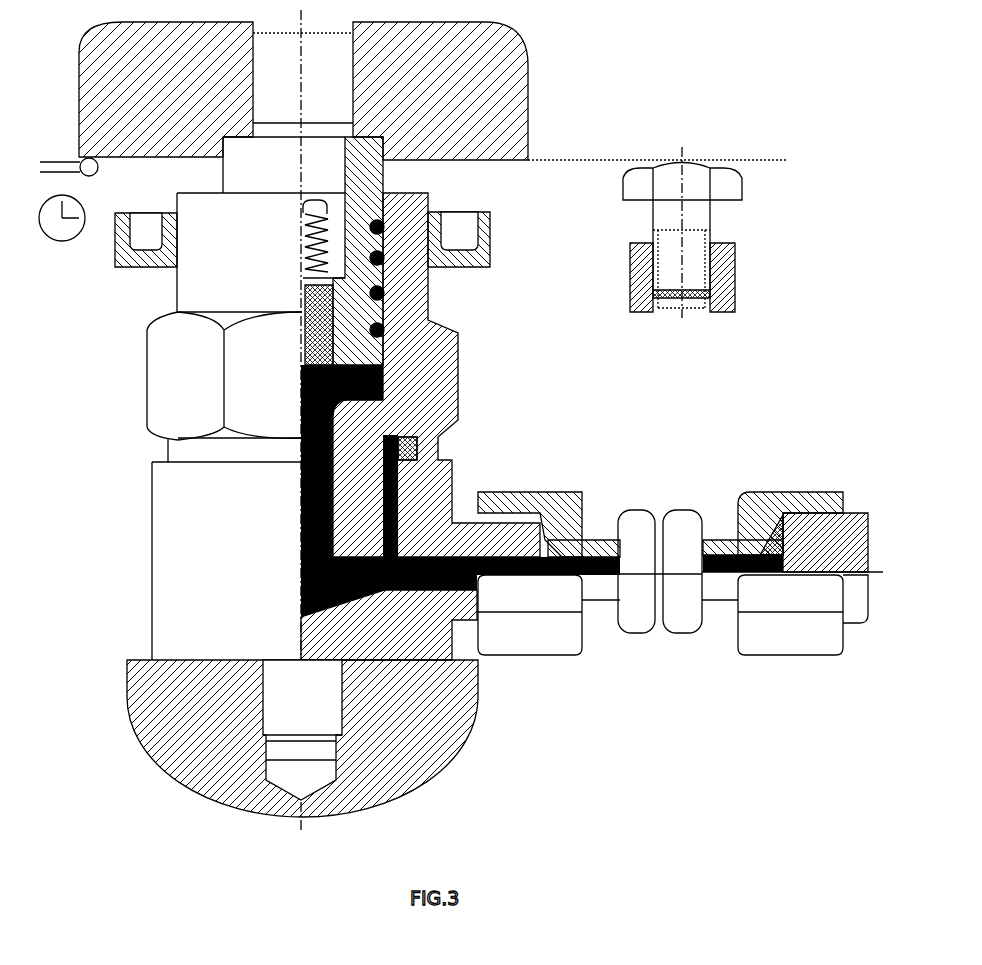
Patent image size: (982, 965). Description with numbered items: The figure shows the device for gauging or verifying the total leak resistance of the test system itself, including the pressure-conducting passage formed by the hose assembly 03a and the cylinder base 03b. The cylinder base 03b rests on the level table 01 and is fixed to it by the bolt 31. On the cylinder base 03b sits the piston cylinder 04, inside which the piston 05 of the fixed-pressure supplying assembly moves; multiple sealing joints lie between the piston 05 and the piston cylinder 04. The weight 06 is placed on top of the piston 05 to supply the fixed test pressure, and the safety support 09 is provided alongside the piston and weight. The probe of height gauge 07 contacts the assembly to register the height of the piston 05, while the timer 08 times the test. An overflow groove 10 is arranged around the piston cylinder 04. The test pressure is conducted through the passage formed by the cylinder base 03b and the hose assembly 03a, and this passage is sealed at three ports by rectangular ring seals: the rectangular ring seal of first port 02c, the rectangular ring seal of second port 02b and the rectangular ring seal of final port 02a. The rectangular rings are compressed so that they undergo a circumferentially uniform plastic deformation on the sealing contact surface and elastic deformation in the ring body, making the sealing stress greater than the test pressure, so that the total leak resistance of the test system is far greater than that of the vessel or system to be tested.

The level table 01 is at (147, 660).
The rectangular ring seal of final port 02a is at (748, 540).
The rectangular ring seal of second port 02b is at (582, 541).
The rectangular ring seal of first port 02c is at (420, 446).
The hose assembly 03a is at (788, 490).
The cylinder base 03b is at (455, 490).
The piston cylinder 04 is at (459, 373).
The piston 05 is at (421, 167).
The weight 06 is at (528, 64).
The probe of height gauge 07 is at (80, 156).
The timer 08 is at (62, 241).
The safety support 09 is at (712, 214).
The overflow groove 10 is at (490, 236).
The bolt for fixing the cylinder base 31 is at (320, 708).